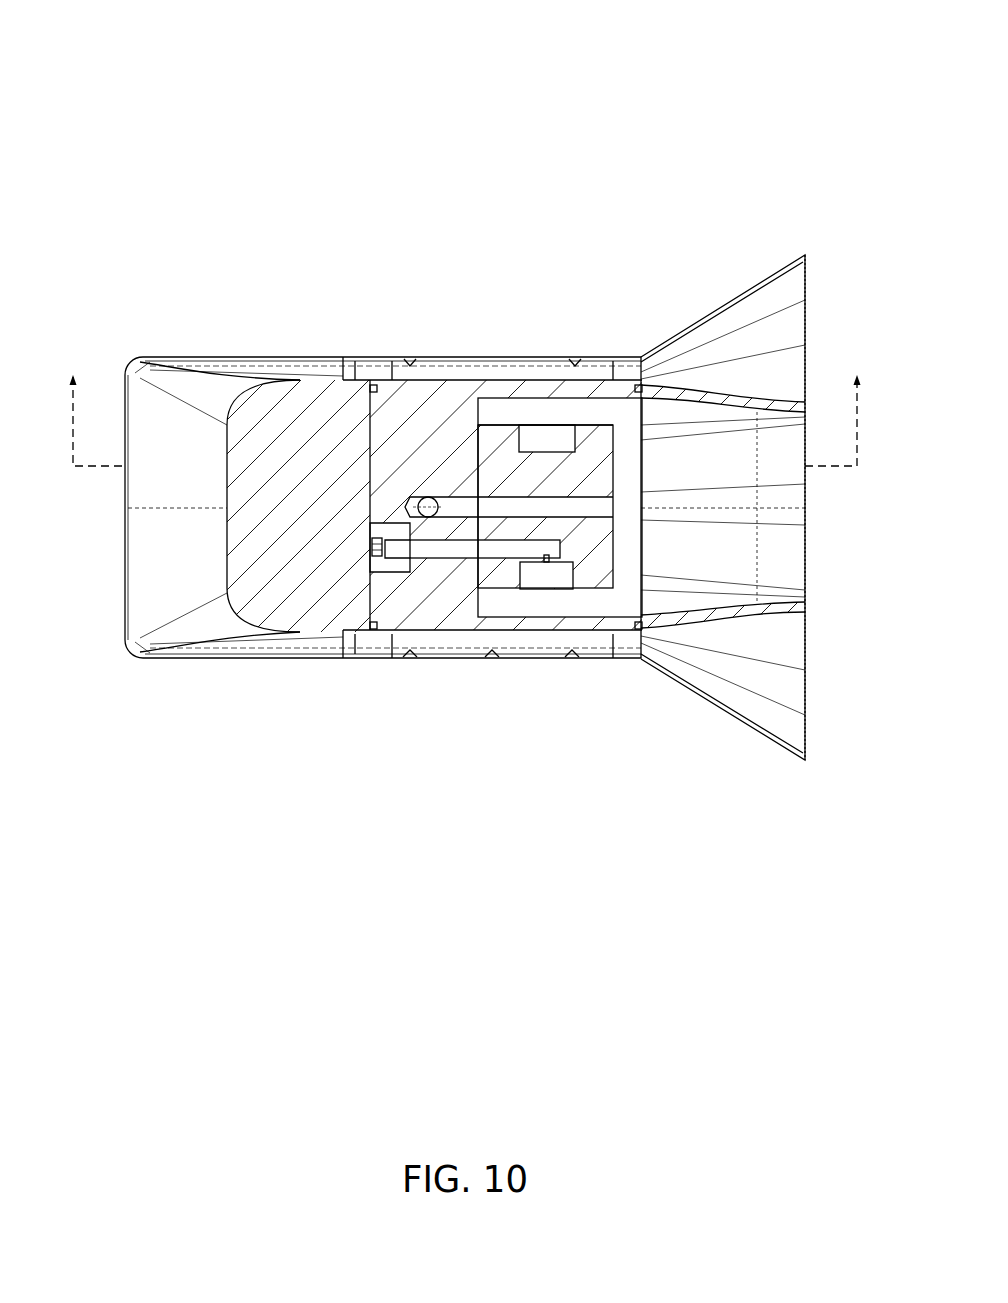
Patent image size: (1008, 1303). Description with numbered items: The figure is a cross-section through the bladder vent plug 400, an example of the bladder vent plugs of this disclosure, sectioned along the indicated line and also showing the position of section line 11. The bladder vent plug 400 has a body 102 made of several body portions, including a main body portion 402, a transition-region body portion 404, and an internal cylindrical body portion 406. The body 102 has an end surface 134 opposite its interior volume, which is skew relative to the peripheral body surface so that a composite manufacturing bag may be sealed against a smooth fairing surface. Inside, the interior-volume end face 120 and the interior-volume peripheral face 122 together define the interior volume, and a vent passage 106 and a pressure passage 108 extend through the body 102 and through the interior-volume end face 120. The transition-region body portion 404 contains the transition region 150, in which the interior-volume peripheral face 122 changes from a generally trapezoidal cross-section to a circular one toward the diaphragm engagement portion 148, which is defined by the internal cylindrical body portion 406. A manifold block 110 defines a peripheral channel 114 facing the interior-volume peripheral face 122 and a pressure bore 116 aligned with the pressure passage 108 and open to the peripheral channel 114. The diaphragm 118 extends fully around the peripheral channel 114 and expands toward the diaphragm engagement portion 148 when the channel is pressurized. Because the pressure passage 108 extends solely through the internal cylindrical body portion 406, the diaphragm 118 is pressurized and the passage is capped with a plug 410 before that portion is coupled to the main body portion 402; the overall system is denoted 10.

The sprayer system 10 is at (758, 62).
The bladder vent plug 400 is at (733, 122).
The body 102 is at (242, 293).
The main body portion 402 is at (200, 353).
The end surface 134 is at (165, 562).
The internal cylindrical body portion 406 is at (385, 381).
The interior-volume end face 120 is at (495, 362).
The peripheral channel 114 is at (535, 403).
The manifold block 110 is at (596, 594).
The diaphragm 118 is at (532, 425).
The diaphragm engagement portion 148 is at (558, 452).
The pressure bore 116 is at (485, 557).
The vent passage 106 is at (460, 497).
The pressure passage 108 is at (450, 557).
The plug 410 is at (373, 573).
The transition-region body portion 404 is at (745, 287).
The interior-volume peripheral face 122 is at (686, 612).
The transition region 150 is at (777, 580).
The section line 11- 11 is at (465, 403).